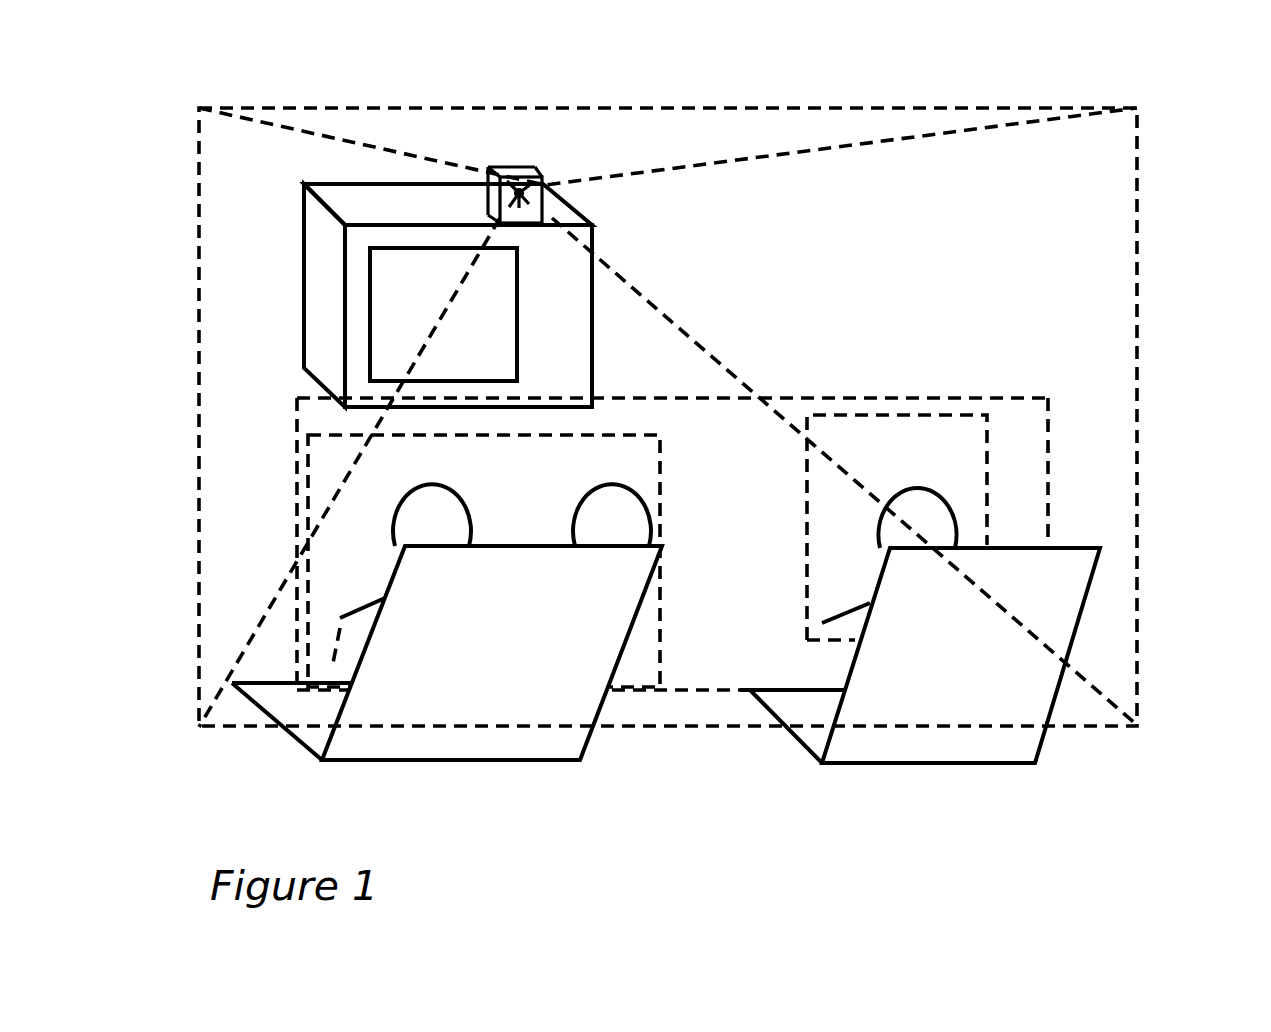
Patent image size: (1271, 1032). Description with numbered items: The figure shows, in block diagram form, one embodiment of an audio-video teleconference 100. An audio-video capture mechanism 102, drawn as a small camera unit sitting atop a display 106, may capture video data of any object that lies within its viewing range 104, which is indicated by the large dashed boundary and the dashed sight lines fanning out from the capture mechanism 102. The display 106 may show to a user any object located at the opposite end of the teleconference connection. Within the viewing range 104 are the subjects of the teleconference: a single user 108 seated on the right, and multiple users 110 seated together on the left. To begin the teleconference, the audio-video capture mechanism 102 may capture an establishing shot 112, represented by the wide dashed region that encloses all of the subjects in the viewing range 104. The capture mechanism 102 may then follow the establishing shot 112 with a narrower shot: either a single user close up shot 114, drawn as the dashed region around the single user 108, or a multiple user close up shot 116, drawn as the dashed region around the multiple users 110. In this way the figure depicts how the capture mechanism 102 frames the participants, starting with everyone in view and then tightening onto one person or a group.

The audio-video teleconference 100 is at (721, 466).
The audio-video capture mechanism 102 is at (528, 168).
The viewing range 104 is at (1050, 100).
The display 106 is at (412, 197).
The single user 108 is at (945, 510).
The multiple users 110 is at (631, 485).
The establishing shot 112 is at (1040, 398).
The single user close up shot 114 is at (986, 447).
The multiple user close up shot 116 is at (620, 431).